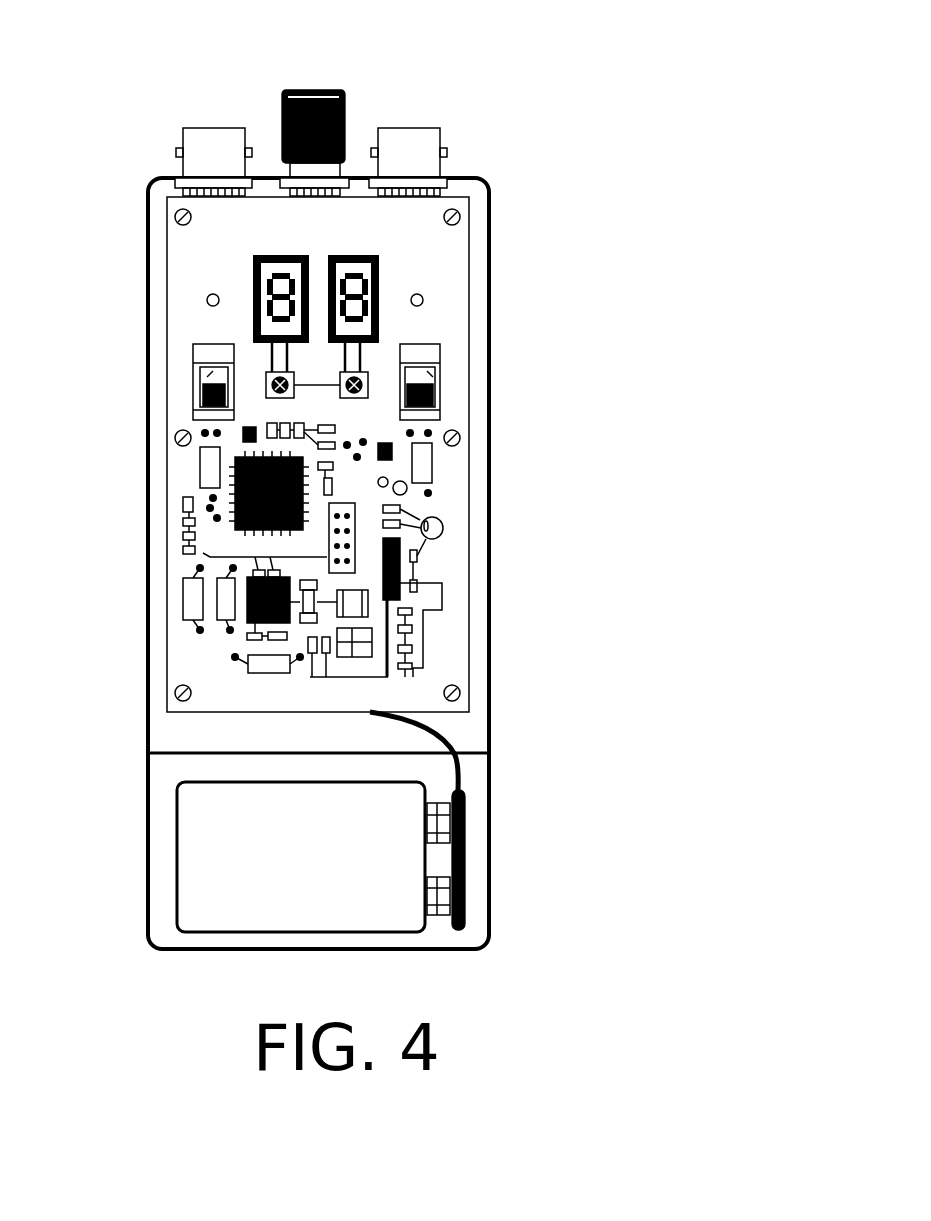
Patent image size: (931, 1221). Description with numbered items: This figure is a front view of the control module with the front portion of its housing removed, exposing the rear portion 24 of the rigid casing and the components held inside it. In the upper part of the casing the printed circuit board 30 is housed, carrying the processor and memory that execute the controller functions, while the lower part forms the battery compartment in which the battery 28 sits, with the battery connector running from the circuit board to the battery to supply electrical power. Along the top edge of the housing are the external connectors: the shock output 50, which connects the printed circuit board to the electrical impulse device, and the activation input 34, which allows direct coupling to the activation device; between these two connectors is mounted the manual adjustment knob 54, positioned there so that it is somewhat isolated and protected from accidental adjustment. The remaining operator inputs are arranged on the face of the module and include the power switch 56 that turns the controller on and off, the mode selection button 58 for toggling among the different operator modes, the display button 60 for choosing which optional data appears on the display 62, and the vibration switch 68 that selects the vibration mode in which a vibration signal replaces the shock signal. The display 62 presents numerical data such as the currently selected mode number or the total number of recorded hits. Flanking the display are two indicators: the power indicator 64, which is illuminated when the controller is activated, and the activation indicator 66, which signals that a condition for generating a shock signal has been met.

The rear portion 24 is at (491, 623).
The battery 28 is at (200, 856).
The printed circuit board 30 is at (185, 650).
The activation input 34 is at (408, 143).
The shock output 50 is at (212, 140).
The manual adjustment knob 54 is at (313, 90).
The power switch 56 is at (425, 373).
The mode selection button 58 is at (362, 396).
The display button 60 is at (272, 396).
The display 62 is at (367, 328).
The power indicator 64 is at (421, 296).
The activation indicator 66 is at (209, 295).
The vibration switch 68 is at (210, 373).